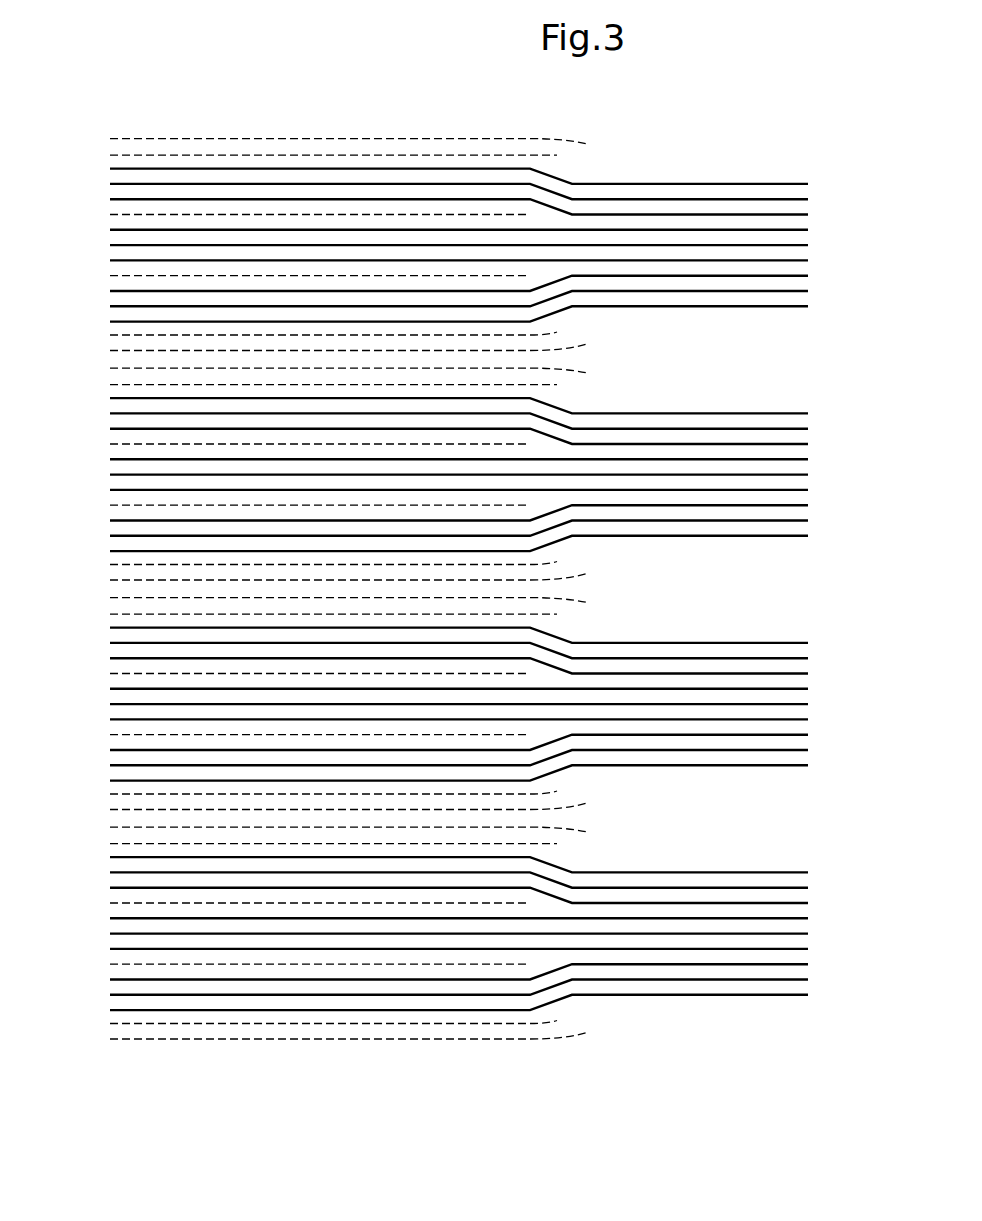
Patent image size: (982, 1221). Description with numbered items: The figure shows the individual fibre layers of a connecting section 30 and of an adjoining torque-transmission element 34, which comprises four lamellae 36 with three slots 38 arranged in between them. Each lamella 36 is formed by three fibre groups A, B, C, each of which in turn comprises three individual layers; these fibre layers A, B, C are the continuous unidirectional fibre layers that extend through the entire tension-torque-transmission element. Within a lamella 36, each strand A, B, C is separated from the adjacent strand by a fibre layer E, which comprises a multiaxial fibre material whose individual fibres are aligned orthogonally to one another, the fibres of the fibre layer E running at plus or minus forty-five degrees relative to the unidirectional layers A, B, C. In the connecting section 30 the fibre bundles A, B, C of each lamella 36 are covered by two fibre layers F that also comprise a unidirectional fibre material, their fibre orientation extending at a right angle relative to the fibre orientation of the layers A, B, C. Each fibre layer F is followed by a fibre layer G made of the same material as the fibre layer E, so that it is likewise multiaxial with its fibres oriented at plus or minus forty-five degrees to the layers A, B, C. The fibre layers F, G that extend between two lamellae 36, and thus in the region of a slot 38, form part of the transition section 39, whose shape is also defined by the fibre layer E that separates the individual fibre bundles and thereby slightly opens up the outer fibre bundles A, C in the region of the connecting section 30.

The connecting section 30 is at (227, 117).
The torque-transmission element 34 is at (802, 122).
The lamella 36 is at (815, 177).
The slot 38 is at (722, 350).
The transition section 39 is at (597, 330).
The fibre group A is at (127, 168).
The fibre group B is at (185, 654).
The fibre group C is at (226, 682).
The fibre layer E is at (455, 275).
The fibre layer F is at (389, 337).
The fibre layer G is at (323, 352).